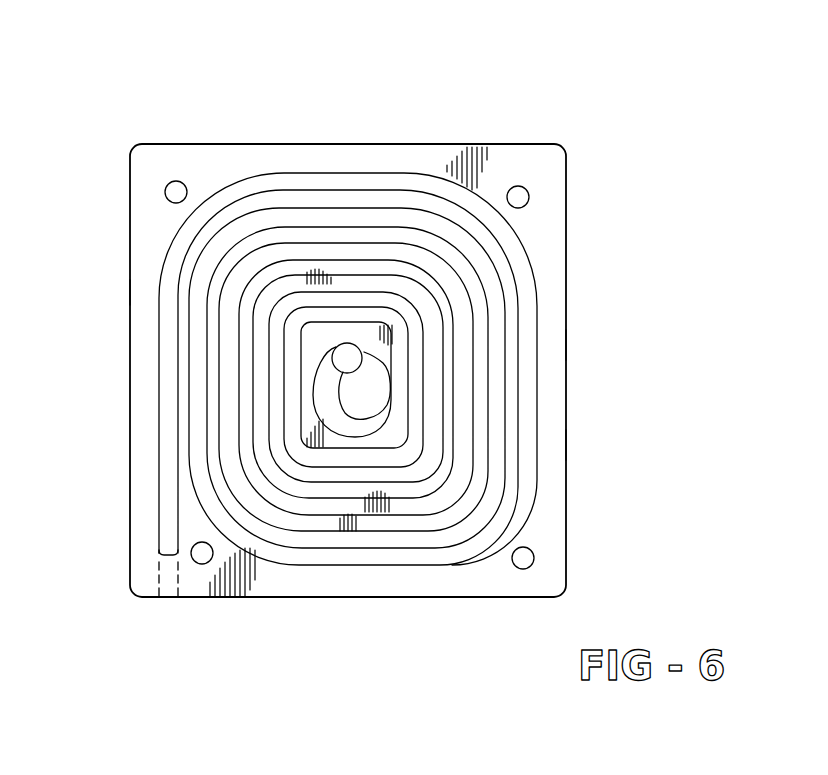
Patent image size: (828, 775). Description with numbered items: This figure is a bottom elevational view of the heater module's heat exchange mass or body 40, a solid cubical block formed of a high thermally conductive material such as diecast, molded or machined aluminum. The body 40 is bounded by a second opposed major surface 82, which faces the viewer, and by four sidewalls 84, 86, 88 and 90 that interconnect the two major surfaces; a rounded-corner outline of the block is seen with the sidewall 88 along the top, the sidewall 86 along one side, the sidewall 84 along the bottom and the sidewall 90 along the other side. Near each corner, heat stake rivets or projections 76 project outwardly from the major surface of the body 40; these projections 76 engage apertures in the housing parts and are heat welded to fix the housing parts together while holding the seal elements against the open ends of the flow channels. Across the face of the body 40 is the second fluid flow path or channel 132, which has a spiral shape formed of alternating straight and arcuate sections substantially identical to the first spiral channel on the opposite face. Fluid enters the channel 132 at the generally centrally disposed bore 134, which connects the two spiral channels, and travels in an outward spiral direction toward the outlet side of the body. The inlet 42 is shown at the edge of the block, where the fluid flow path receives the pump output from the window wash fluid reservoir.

The heat exchange mass or body 40 is at (578, 305).
The inlet 42 is at (160, 563).
The heat stake rivets or projections 76 is at (182, 183).
The second opposed major surface 82 is at (561, 346).
The sidewall 84 is at (410, 598).
The sidewall 86 is at (572, 448).
The sidewall 88 is at (435, 143).
The sidewall 90 is at (131, 292).
The second fluid flow path or channel 132 is at (497, 263).
The bore 134 is at (347, 345).